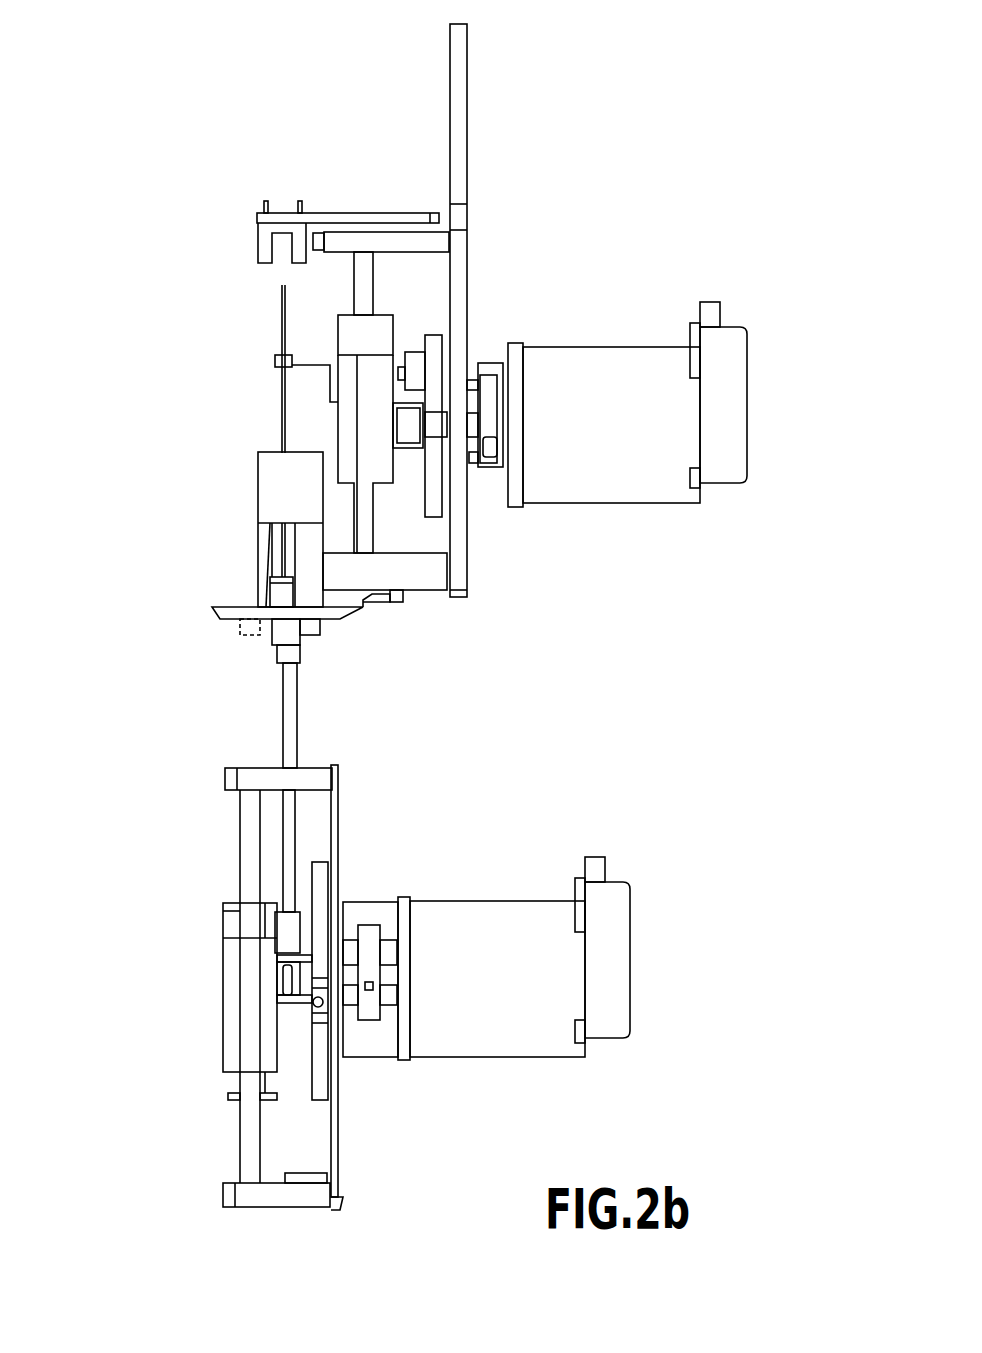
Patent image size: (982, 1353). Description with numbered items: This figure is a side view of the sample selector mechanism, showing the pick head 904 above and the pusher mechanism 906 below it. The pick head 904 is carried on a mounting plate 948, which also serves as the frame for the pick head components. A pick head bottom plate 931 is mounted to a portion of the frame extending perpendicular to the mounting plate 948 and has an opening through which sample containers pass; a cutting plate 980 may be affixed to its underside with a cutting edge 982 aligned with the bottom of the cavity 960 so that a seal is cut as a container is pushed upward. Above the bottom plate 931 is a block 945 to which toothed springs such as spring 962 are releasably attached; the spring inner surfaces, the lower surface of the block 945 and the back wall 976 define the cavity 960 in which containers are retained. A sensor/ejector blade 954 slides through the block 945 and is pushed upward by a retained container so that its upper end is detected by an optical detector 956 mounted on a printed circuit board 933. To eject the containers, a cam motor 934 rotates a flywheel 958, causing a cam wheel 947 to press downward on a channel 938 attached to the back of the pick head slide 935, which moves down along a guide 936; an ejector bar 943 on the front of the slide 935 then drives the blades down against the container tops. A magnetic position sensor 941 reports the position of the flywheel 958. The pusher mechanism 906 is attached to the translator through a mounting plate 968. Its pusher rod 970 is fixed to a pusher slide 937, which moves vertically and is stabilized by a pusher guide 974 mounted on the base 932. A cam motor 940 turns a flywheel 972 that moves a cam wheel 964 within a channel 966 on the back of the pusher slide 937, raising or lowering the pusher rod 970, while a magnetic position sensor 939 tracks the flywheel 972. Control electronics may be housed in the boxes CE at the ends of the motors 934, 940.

The pick head 904 is at (178, 103).
The pusher mechanism 906 is at (160, 820).
The pick head bottom plate 931 is at (237, 615).
The base 932 is at (277, 1197).
The printed circuit board 933 is at (313, 218).
The cam motor 934 is at (615, 352).
The pick head slide 935 is at (347, 418).
The guide 936 is at (370, 290).
The pusher slide 937 is at (228, 970).
The channel 938 is at (408, 453).
The magnetic position sensor 939 is at (368, 937).
The cam motor 940 is at (463, 913).
The magnetic position sensor 941 is at (497, 497).
The ejector bar 943 is at (292, 363).
The block 945 is at (263, 490).
The cam wheel 947 is at (415, 370).
The mounting plate 948 is at (462, 107).
The sensor/ejector blade 954 is at (282, 338).
The optical detector 956 is at (257, 240).
The flywheel 958 is at (438, 357).
The cavity 960 is at (273, 567).
The spring 962 is at (260, 540).
The cam wheel 964 is at (282, 1000).
The channel 966 is at (280, 962).
The mounting plate 968 is at (337, 815).
The pusher rod 970 is at (296, 725).
The flywheel 972 is at (322, 1090).
The pusher guide 974 is at (245, 1150).
The back wall 976 is at (310, 595).
The cutting plate 980 is at (258, 625).
The cutting edge 982 is at (240, 630).
The control electronics boxes CE is at (747, 383).